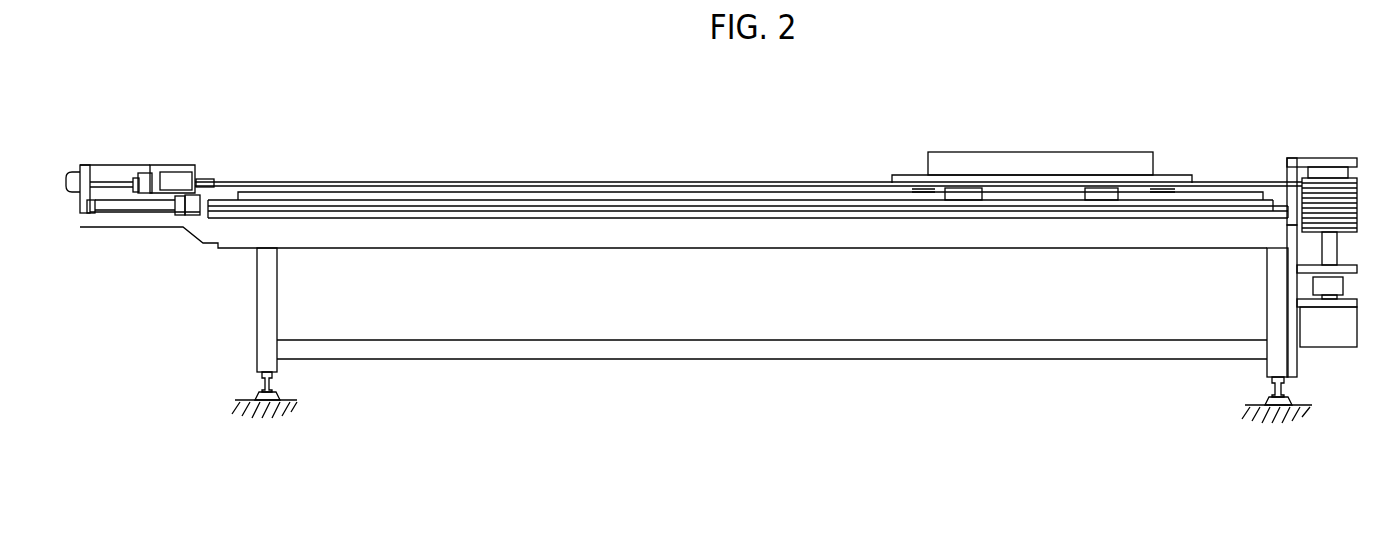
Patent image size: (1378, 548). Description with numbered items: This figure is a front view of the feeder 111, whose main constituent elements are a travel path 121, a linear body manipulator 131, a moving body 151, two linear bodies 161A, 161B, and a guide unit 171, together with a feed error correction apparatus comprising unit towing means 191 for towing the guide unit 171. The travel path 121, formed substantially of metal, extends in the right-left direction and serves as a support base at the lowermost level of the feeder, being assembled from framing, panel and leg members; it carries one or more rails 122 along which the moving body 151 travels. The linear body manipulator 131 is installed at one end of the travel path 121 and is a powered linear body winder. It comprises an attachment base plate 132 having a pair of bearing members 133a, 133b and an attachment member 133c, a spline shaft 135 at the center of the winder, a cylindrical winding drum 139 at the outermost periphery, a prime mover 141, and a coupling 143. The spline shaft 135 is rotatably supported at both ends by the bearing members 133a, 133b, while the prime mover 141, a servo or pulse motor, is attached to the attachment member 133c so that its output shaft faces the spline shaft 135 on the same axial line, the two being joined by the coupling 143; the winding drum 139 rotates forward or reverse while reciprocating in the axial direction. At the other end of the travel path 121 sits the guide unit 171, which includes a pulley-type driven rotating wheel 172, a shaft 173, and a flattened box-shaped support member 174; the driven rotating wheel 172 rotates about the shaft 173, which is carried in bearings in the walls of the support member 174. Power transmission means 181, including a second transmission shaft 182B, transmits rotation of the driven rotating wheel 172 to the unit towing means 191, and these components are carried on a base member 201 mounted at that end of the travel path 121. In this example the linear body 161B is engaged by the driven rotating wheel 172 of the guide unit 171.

The feeder 111 is at (617, 181).
The travel path 121 is at (765, 237).
The rail 122 is at (747, 199).
The linear body manipulator 131 is at (1316, 155).
The attachment base plate 132 is at (1292, 230).
The bearing member 133a is at (1320, 268).
The bearing member 133b is at (1318, 163).
The attachment member 133c is at (1323, 302).
The spline shaft 135 is at (1329, 252).
The winding drum 139 is at (1333, 185).
The prime mover 141 is at (1332, 338).
The coupling 143 is at (1326, 285).
The moving body 151 is at (1075, 176).
The linear body 161A is at (1221, 186).
The linear body 161B is at (482, 182).
The guide unit 171 is at (183, 163).
The driven rotating wheel 172 is at (213, 181).
The shaft 173 is at (193, 171).
The support member 174 is at (170, 178).
The power transmission means 181 is at (150, 211).
The second transmission shaft 182B is at (108, 183).
The unit towing means 191 is at (75, 193).
The base member 201 is at (85, 163).